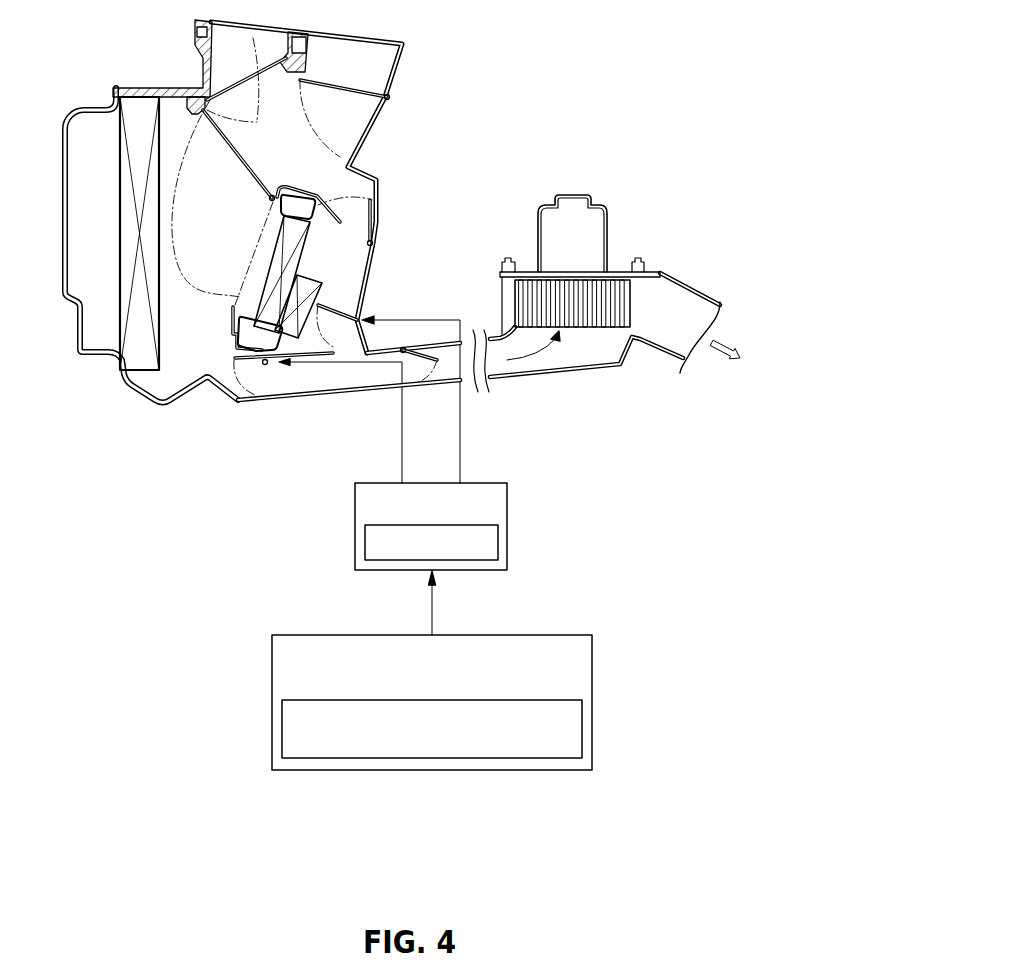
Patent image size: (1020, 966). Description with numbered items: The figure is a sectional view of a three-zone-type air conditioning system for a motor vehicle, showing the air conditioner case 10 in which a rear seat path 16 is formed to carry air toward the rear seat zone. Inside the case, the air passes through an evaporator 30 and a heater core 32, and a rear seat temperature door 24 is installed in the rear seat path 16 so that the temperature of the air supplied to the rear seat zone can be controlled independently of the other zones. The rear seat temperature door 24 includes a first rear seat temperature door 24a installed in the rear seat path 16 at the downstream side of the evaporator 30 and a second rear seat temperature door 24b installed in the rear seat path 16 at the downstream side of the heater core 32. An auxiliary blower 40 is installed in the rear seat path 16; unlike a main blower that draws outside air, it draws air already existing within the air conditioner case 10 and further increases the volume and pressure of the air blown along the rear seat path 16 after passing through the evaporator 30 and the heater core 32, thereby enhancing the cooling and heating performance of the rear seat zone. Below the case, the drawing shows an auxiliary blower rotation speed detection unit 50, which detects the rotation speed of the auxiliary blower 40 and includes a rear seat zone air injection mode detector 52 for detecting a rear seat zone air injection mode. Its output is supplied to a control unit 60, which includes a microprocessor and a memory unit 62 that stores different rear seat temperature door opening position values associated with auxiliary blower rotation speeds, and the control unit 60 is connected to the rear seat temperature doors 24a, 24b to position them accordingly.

The air conditioner case 10 is at (83, 107).
The rear seat path 16 is at (394, 368).
The rear seat temperature door 24 is at (296, 395).
The first rear seat temperature door 24a is at (265, 366).
The second rear seat temperature door 24b is at (340, 356).
The evaporator 30 is at (140, 362).
The heater core 32 is at (288, 266).
The auxiliary blower 40 is at (525, 305).
The auxiliary blower rotation speed detection unit 50 is at (481, 696).
The rear seat zone air injection mode detector 52 is at (582, 728).
The control unit 60 is at (465, 526).
The memory unit 62 is at (498, 540).